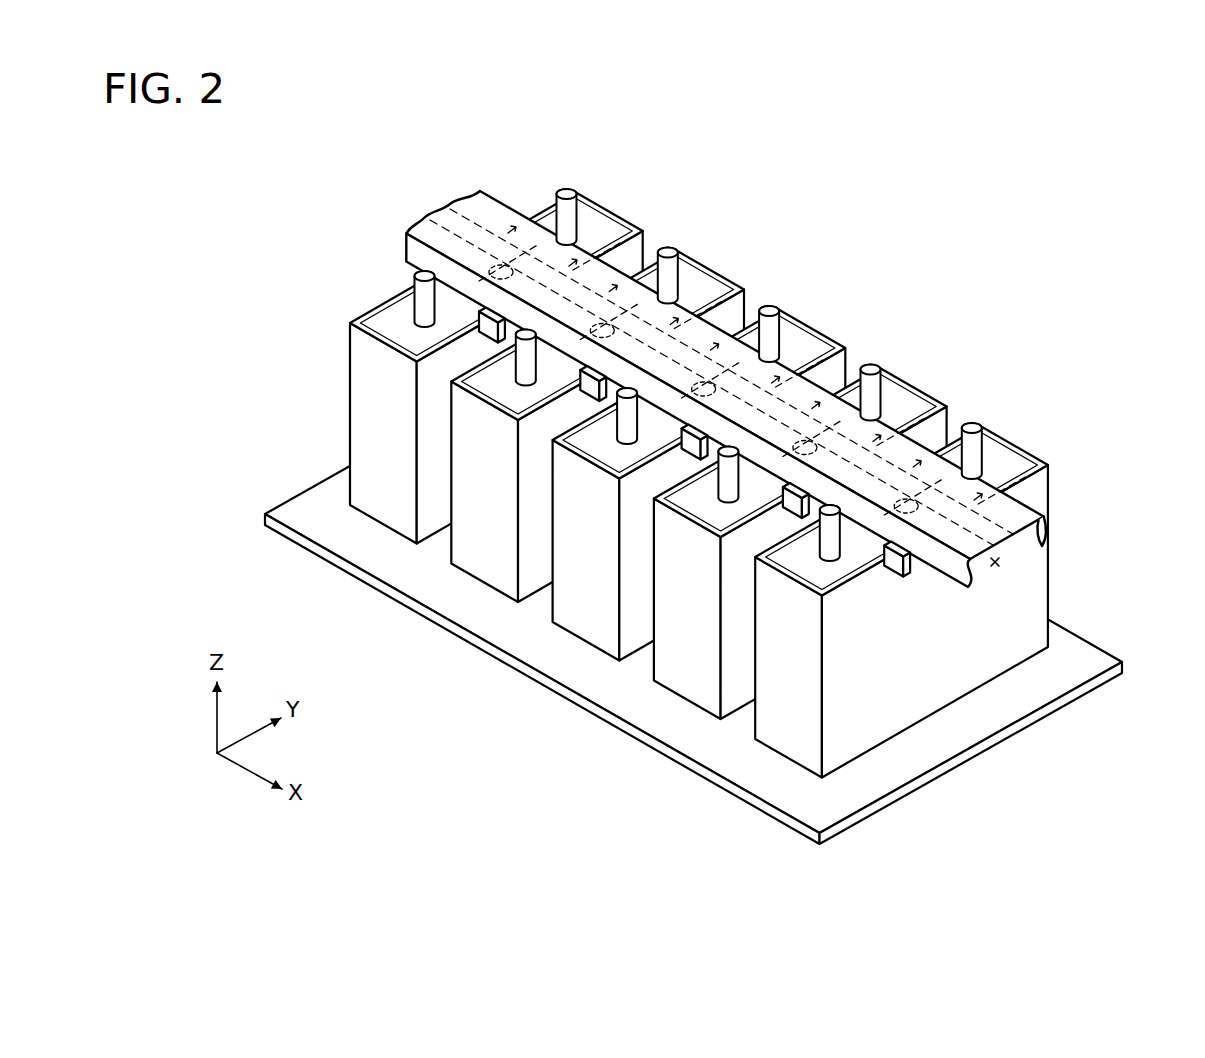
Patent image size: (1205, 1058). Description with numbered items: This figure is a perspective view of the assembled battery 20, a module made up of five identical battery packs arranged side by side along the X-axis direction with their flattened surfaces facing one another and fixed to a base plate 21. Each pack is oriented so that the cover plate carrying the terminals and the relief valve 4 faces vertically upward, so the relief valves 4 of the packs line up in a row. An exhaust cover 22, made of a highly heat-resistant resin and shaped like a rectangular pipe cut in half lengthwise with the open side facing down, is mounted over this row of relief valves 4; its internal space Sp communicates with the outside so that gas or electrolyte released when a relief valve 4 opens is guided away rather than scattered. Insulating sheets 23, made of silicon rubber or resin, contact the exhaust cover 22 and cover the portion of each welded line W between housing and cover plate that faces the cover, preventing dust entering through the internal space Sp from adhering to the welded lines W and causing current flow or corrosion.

The assembled battery 20 is at (699, 502).
The base plate 21 is at (1022, 697).
The exhaust cover 22 is at (432, 232).
The insulating sheet 23 is at (514, 225).
The relief valve 4 is at (478, 266).
The welded line W is at (431, 344).
The internal space Sp is at (1000, 565).